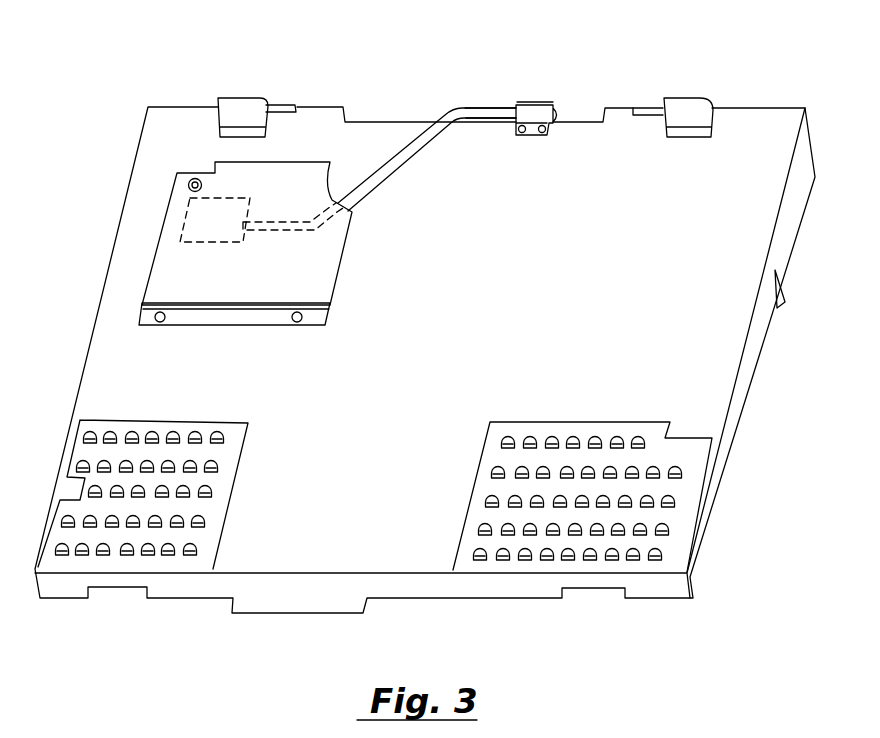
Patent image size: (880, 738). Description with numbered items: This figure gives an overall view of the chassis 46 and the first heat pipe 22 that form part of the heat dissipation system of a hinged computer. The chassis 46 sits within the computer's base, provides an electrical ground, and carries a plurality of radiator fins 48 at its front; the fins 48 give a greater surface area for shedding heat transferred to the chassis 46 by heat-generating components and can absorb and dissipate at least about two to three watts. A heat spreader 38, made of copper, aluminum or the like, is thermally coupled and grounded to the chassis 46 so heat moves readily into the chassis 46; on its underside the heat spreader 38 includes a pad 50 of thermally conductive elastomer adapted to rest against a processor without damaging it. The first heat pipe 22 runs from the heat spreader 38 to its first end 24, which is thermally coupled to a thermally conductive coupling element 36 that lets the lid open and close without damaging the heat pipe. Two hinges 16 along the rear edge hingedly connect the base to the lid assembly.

The hinge 16 is at (238, 108).
The first heat pipe 22 is at (403, 153).
The first end 24 is at (500, 108).
The thermally conductive coupling element 36 is at (551, 100).
The heat spreader 38 is at (318, 288).
The chassis 46 is at (547, 303).
The radiator fins 48 is at (480, 460).
The pad 50 is at (203, 218).